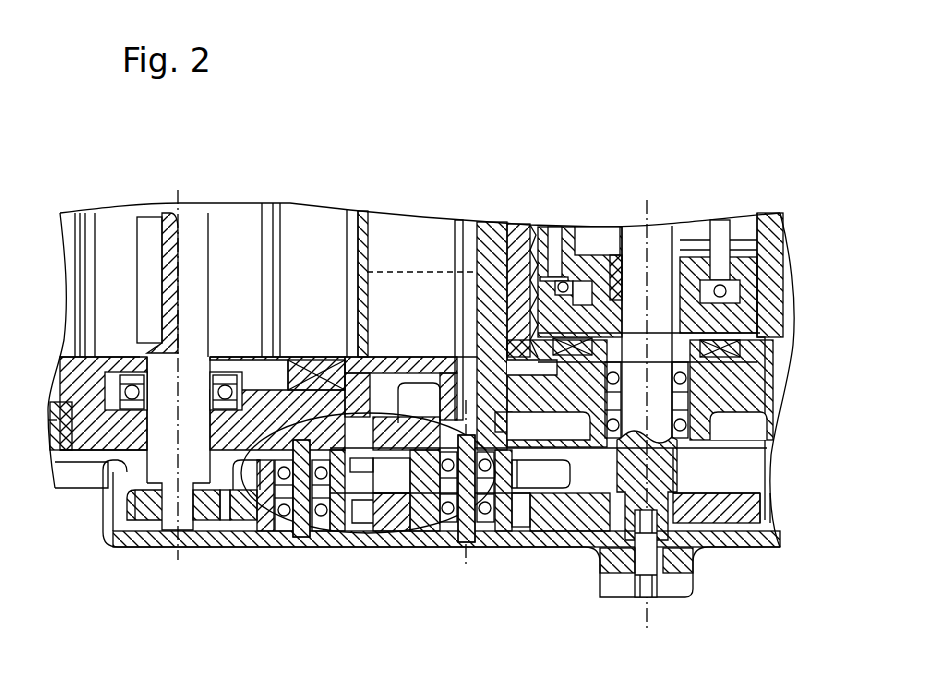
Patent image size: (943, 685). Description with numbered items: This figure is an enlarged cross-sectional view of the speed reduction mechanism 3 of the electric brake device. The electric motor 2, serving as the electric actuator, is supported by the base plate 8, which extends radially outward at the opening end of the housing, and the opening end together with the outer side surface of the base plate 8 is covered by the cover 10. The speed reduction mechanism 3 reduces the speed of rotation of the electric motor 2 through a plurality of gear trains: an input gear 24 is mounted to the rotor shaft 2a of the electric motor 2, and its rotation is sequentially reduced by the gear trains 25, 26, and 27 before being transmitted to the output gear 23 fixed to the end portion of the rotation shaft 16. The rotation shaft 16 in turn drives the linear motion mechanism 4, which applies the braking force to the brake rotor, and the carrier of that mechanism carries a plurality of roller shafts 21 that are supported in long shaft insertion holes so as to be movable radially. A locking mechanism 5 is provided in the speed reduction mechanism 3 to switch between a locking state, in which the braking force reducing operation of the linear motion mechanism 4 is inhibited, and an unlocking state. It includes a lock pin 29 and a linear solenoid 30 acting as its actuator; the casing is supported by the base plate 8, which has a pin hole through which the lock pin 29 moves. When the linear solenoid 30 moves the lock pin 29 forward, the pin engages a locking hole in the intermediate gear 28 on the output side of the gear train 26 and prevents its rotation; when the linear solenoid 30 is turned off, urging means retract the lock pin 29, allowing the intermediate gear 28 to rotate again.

The electric motor 2 is at (245, 210).
The rotor shaft 2a is at (195, 210).
The speed reduction mechanism 3 is at (328, 570).
The linear motion mechanism 4 is at (750, 455).
The locking mechanism 5 is at (390, 493).
The base plate 8 is at (85, 435).
The cover 10 is at (682, 555).
The rotation shaft 16 is at (637, 228).
The roller shaft 21 is at (723, 220).
The output gear 23 is at (730, 508).
The input gear 24 is at (150, 521).
The gear train 25 is at (220, 517).
The gear train 26 is at (370, 493).
The gear train 27 is at (533, 528).
The intermediate gear 28 is at (280, 505).
The lock pin 29 is at (410, 494).
The linear solenoid 30 is at (416, 270).